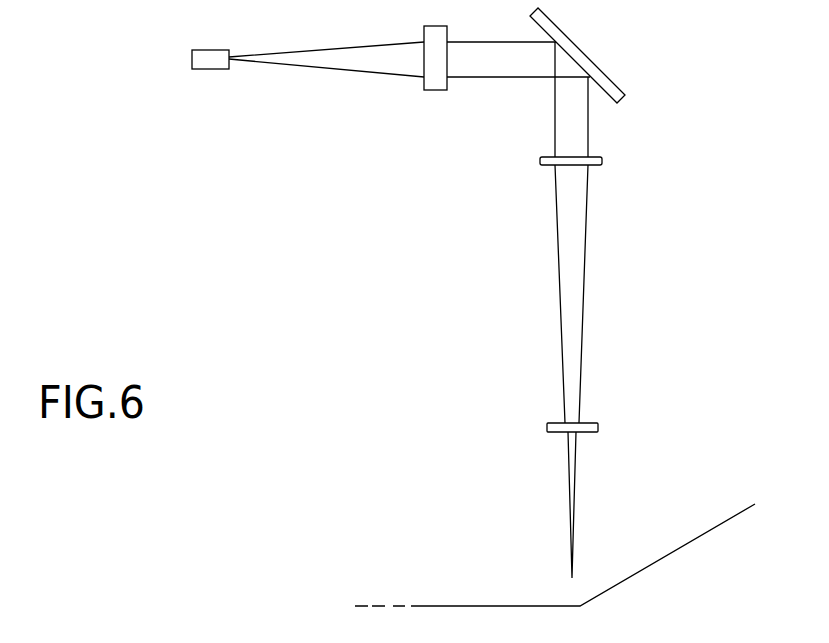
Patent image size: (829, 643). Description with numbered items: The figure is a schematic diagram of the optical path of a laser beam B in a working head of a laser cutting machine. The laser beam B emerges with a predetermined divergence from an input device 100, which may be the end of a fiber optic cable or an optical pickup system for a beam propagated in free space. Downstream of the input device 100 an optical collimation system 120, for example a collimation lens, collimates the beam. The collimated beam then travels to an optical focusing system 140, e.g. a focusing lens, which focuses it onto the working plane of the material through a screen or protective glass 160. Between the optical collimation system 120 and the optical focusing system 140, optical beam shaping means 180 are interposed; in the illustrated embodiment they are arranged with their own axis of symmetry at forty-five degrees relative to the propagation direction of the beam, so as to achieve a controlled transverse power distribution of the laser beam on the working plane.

The input device 100 is at (209, 69).
The optical collimation system 120 is at (436, 90).
The optical beam shaping means 180 is at (583, 50).
The optical focusing system 140 is at (602, 160).
The laser beam B is at (574, 236).
The protective glass 160 is at (598, 428).